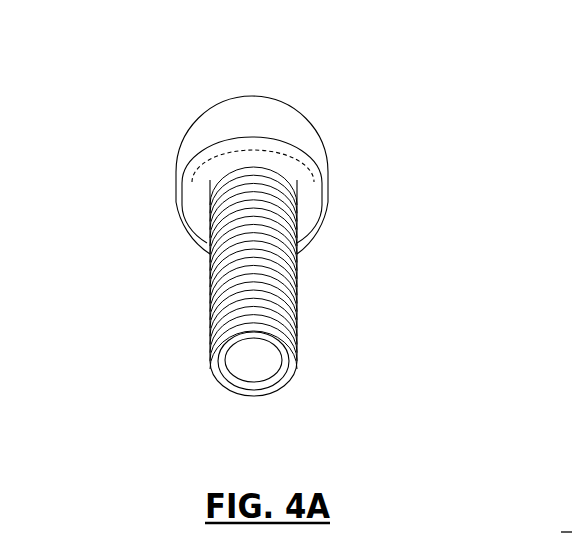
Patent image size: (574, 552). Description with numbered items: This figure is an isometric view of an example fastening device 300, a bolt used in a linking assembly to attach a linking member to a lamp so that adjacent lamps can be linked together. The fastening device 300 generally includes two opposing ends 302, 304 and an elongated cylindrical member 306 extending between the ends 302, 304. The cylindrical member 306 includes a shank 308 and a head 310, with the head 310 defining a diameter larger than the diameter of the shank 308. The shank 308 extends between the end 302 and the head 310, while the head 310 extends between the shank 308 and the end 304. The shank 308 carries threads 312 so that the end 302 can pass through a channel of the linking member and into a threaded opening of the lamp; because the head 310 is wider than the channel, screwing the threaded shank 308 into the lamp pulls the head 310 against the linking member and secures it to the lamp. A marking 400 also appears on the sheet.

The fastening device 300 is at (155, 62).
The end 302 is at (251, 360).
The end 304 is at (262, 96).
The elongated cylindrical member 306 is at (158, 238).
The shank 308 is at (210, 308).
The head 310 is at (196, 148).
The threads 312 is at (288, 252).
The reference 400 is at (548, 534).